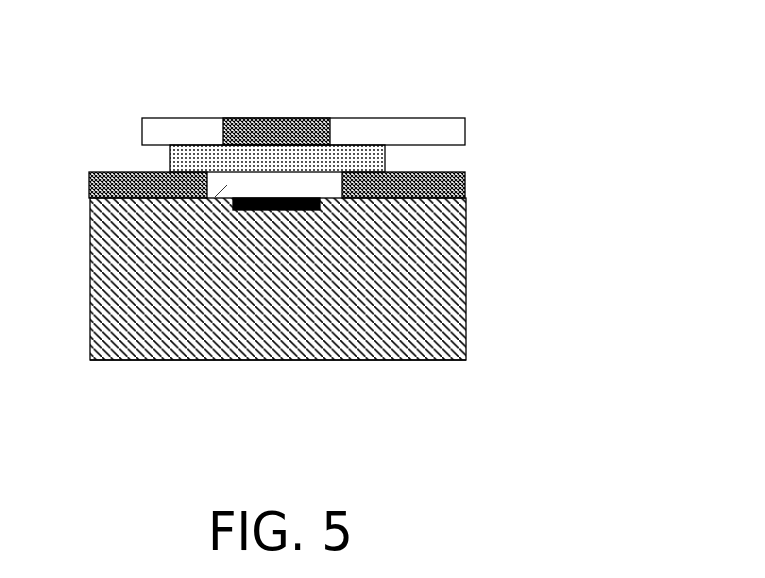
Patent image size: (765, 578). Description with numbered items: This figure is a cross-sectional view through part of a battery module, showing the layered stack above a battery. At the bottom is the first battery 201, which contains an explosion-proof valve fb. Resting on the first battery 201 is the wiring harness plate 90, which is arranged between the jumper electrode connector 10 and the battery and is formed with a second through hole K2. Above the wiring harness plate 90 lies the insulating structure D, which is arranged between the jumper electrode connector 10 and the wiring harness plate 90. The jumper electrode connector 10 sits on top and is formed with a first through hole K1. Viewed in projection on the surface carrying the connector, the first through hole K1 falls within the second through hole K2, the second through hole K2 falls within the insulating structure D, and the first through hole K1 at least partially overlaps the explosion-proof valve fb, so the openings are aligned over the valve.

The jumper electrode connector 10 is at (424, 133).
The first through hole K1 is at (295, 118).
The insulating structure D is at (193, 146).
The wiring harness plate 90 is at (117, 172).
The second through hole K2 is at (90, 360).
The first battery 201 is at (223, 360).
The explosion-proof valve fb is at (348, 360).